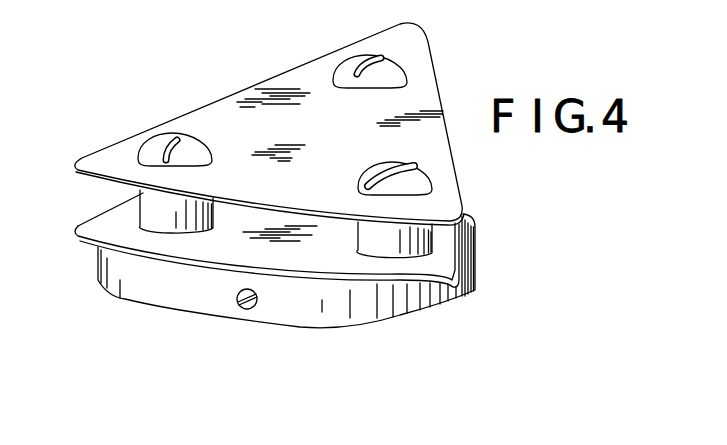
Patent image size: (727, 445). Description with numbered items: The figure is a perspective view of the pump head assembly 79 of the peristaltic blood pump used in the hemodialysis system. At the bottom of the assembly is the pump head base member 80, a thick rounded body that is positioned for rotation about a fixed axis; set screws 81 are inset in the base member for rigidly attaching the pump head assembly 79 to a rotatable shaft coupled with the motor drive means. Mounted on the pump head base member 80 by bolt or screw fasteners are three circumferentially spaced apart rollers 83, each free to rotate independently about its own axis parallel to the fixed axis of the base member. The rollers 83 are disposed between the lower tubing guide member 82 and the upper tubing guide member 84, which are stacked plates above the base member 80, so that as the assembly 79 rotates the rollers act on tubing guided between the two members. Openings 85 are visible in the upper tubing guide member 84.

The pump head assembly 79 is at (480, 200).
The pump head base member 80 is at (312, 310).
The set screws 81 is at (251, 310).
The lower tubing guide member 82 is at (93, 226).
The rollers 83 is at (150, 213).
The upper tubing guide member 84 is at (100, 152).
The holes 85 is at (163, 147).